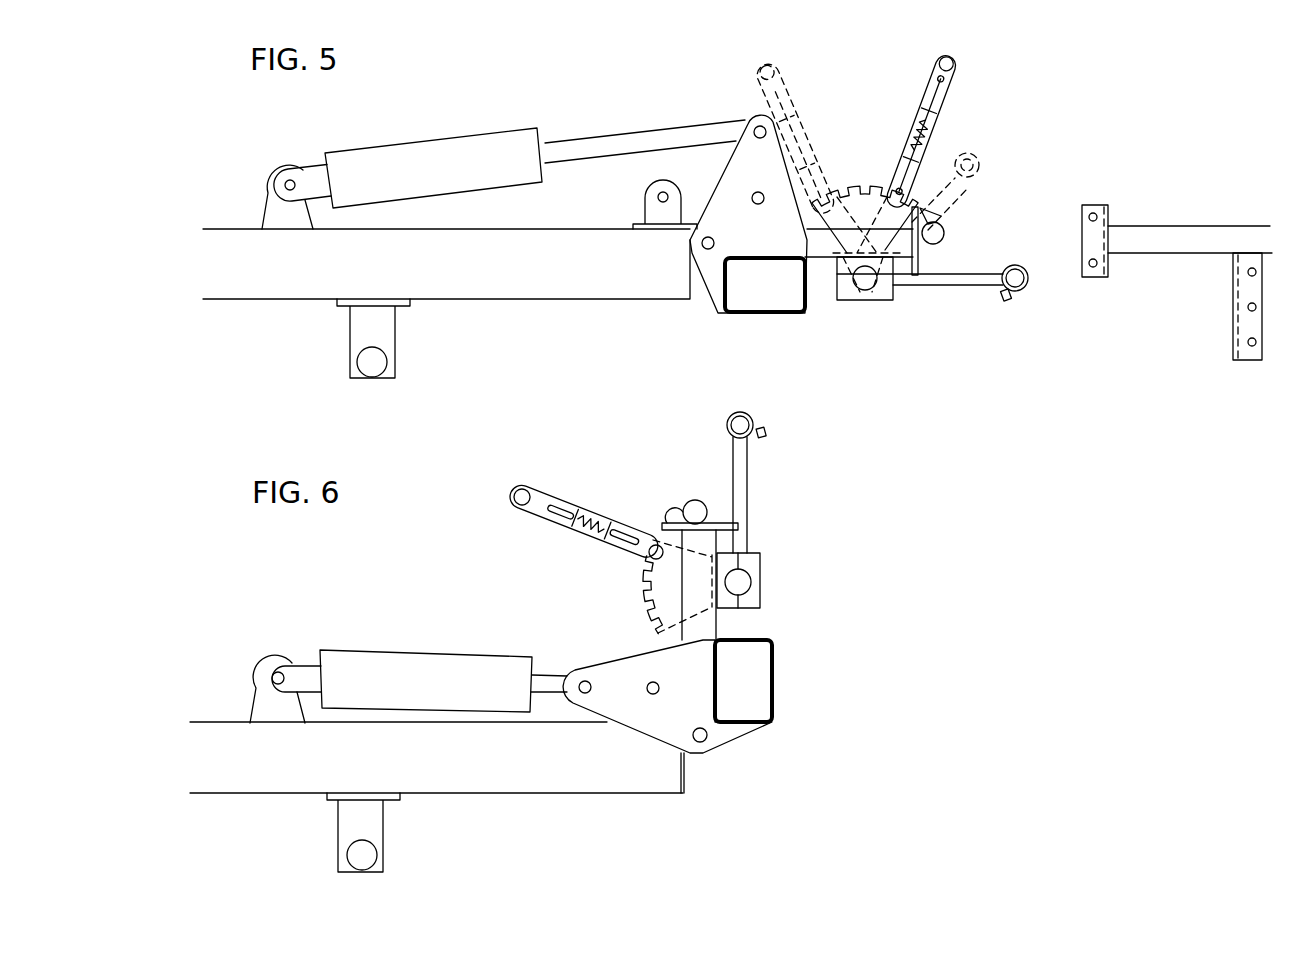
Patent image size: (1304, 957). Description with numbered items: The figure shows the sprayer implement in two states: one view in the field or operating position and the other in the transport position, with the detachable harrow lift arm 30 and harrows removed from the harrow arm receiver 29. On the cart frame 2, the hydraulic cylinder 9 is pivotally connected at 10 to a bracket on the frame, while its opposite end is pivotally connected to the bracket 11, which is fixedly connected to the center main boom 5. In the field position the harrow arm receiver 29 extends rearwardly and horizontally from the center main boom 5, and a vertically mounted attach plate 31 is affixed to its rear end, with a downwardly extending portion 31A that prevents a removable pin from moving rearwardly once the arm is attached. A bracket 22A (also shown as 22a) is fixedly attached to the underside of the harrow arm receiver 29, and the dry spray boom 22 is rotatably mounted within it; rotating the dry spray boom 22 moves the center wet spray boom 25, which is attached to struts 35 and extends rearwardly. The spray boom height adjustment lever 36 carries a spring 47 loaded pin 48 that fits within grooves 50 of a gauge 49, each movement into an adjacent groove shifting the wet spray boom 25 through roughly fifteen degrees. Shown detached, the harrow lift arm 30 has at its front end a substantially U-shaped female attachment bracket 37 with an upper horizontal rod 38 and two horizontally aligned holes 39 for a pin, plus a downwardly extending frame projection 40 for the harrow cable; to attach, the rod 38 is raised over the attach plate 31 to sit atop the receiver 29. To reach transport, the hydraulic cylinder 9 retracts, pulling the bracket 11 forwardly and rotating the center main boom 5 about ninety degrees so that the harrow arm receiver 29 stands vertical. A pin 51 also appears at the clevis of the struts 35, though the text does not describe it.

In FIG. 6, the cart frame 2 is at (520, 793).
In FIG. 5, the center main boom 5 is at (772, 313).
In FIG. 6, the center main boom 5 is at (747, 685).
In FIG. 5, the hydraulic cylinder 9 is at (466, 168).
In FIG. 6, the hydraulic cylinder 9 is at (505, 657).
In FIG. 5, the pivotal connection 10 is at (288, 178).
In FIG. 5, the bracket 11 is at (747, 173).
In FIG. 6, the bracket 11 is at (632, 680).
In FIG. 5, the dry spray boom 22 is at (865, 288).
In FIG. 6, the dry spray boom 22 is at (740, 582).
In FIG. 5, the bracket 22a is at (885, 295).
In FIG. 6, the bracket 22A is at (760, 553).
In FIG. 5, the center wet spray boom 25 is at (1016, 270).
In FIG. 6, the center wet spray boom 25 is at (730, 420).
In FIG. 5, the harrow arm receiver 29 is at (822, 245).
In FIG. 6, the harrow arm receiver 29 is at (700, 628).
In FIG. 5, the harrow lift arm 30 is at (1188, 253).
In FIG. 5, the attach plate 31 is at (921, 252).
In FIG. 5, the downwardly extending portion 31A is at (919, 263).
In FIG. 5, the struts 35 is at (970, 286).
In FIG. 6, the struts 35 is at (748, 495).
In FIG. 5, the spray boom height adjustment lever 36 is at (943, 83).
In FIG. 6, the spray boom height adjustment lever 36 is at (515, 485).
In FIG. 5, the female harrow lift arm attachment bracket 37 is at (1103, 205).
In FIG. 5, the upper horizontal rod 38 is at (1092, 213).
In FIG. 5, the holes 39 is at (1095, 267).
In FIG. 5, the frame projection 40 is at (1243, 343).
In FIG. 6, the spring 47 is at (590, 520).
In FIG. 6, the pin 48 is at (653, 543).
In FIG. 6, the gauge 49 is at (700, 505).
In FIG. 6, the grooves 50 is at (682, 508).
In FIG. 5, the pin 51 is at (1012, 297).
In FIG. 6, the pin 51 is at (757, 427).